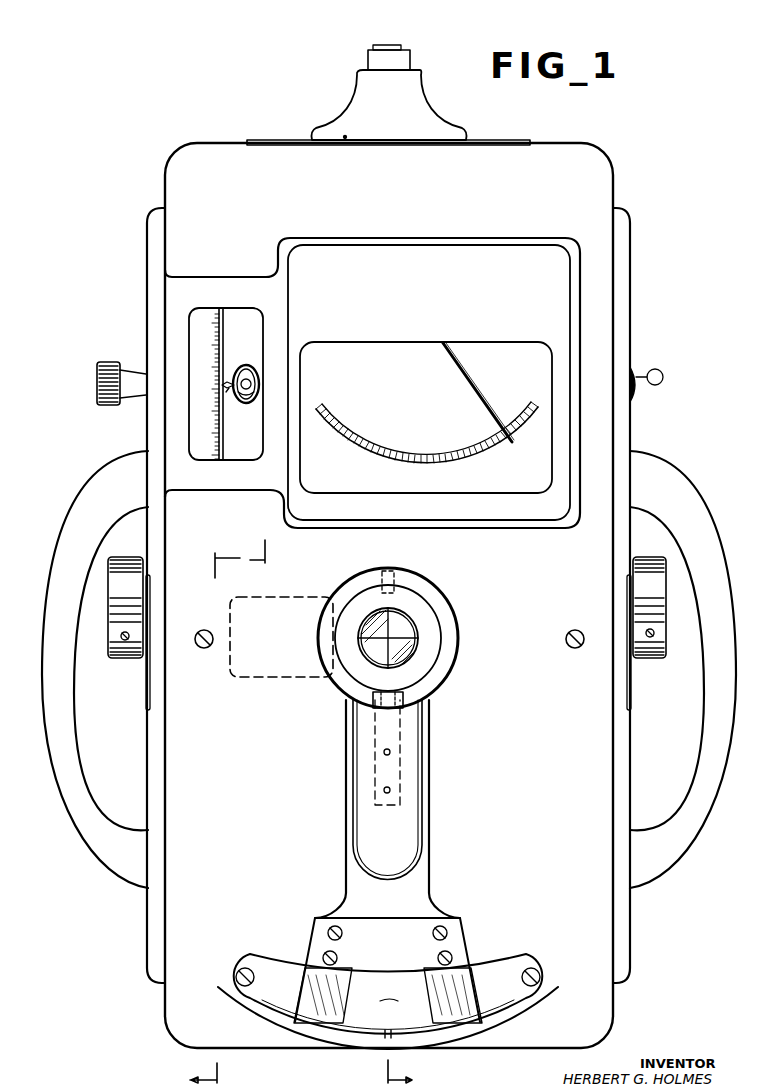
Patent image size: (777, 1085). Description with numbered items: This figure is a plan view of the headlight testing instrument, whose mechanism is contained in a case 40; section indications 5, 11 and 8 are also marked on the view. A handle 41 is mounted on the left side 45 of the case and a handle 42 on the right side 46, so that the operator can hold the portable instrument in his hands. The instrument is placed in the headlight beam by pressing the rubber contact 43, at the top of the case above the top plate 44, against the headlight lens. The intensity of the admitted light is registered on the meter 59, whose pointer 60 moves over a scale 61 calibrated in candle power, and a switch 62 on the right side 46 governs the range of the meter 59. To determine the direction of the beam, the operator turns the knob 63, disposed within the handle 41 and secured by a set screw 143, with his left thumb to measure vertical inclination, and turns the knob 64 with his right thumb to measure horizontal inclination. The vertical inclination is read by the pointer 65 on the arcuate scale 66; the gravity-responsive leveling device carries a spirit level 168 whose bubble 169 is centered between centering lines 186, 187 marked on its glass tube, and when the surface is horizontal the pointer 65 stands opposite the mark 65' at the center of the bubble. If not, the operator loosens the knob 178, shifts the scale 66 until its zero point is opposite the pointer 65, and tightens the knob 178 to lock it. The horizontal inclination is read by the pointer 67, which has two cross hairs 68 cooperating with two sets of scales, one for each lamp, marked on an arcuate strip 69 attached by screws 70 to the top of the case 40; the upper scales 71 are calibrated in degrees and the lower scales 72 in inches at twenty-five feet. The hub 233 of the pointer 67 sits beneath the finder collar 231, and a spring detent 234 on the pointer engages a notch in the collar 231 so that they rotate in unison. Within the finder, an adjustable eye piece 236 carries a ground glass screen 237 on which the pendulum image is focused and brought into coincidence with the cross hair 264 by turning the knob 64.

The section line 5- 5 is at (388, 15).
The section line 11- 11 is at (267, 82).
The section line 8- 8 is at (748, 548).
The case 40 is at (603, 202).
The handle 41 is at (78, 506).
The handle 42 is at (680, 476).
The contact 43 is at (400, 47).
The top plate 44 is at (508, 143).
The left side 45 is at (147, 436).
The right side 46 is at (630, 442).
The meter 59 is at (563, 357).
The pointer 60 is at (476, 392).
The scale 61 is at (483, 448).
The switch 62 is at (663, 375).
The knob 63 is at (112, 664).
The knob 64 is at (664, 650).
The pointer 65 is at (239, 363).
The mark 65' is at (242, 408).
The scale 66 is at (205, 350).
The pointer 67 is at (395, 944).
The cross hairs 68 is at (485, 1052).
The arcuate strip 69 is at (262, 963).
The screws 70 is at (553, 967).
The upper scales 71 is at (366, 1003).
The lower scales 72 is at (376, 1035).
The set screw 143 is at (121, 636).
The spirit level 168 is at (248, 368).
The bubble 169 is at (251, 386).
The knob 178 is at (106, 364).
The centering line 186 is at (257, 370).
The centering line 187 is at (255, 398).
The collar 231 is at (452, 643).
The hub 233 is at (430, 692).
The spring detent 234 is at (400, 742).
The eye piece 236 is at (430, 621).
The ground glass screen 237 is at (402, 650).
The cross hair 264 is at (380, 645).